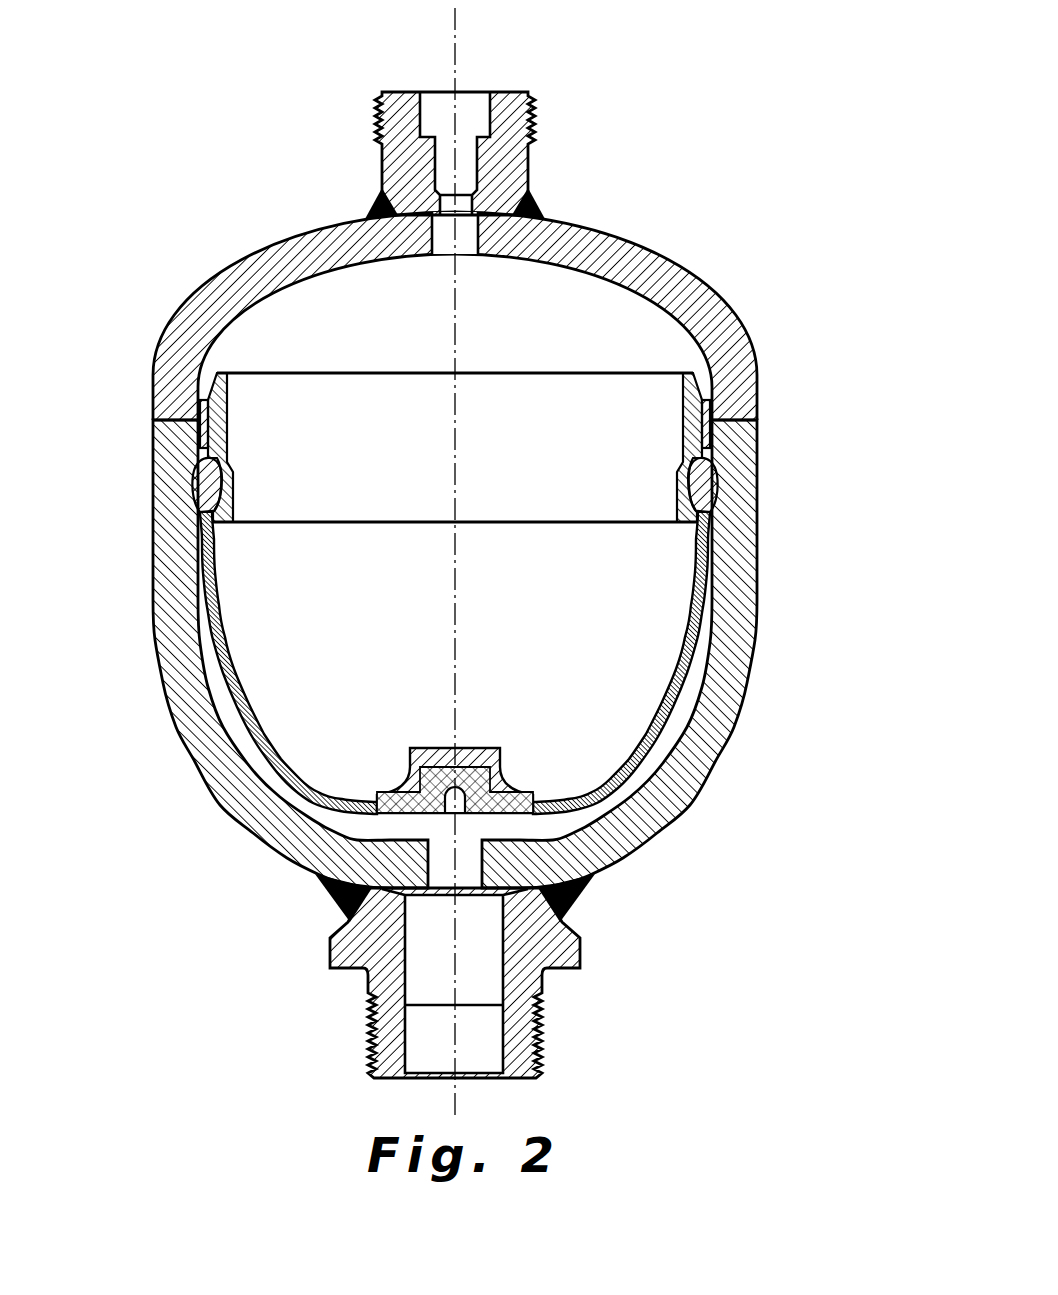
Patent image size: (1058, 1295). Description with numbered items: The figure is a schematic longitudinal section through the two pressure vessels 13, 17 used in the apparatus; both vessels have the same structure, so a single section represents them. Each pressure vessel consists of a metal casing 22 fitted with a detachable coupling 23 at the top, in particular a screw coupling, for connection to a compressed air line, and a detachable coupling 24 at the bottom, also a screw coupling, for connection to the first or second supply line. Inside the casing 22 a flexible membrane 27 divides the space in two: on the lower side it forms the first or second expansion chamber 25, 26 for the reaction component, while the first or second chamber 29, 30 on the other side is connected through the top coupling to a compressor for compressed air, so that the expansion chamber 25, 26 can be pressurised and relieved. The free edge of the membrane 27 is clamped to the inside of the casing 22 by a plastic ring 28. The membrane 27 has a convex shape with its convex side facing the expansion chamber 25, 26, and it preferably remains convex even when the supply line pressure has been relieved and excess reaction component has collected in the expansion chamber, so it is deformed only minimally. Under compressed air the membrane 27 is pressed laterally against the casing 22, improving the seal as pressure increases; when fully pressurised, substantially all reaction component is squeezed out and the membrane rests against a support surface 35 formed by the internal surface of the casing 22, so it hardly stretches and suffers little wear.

The first pressure vessel 13 is at (496, 506).
The second pressure vessel 17 is at (496, 506).
The metal casing 22 is at (748, 380).
The detachable coupling 23 is at (507, 107).
The detachable coupling 24 is at (520, 1028).
The first expansion chamber 25 is at (618, 787).
The second expansion chamber 26 is at (633, 778).
The flexible membrane 27 is at (680, 675).
The plastic ring 28 is at (210, 455).
The first chamber 29 is at (550, 323).
The second chamber 30 is at (617, 342).
The support surface 35 is at (252, 766).